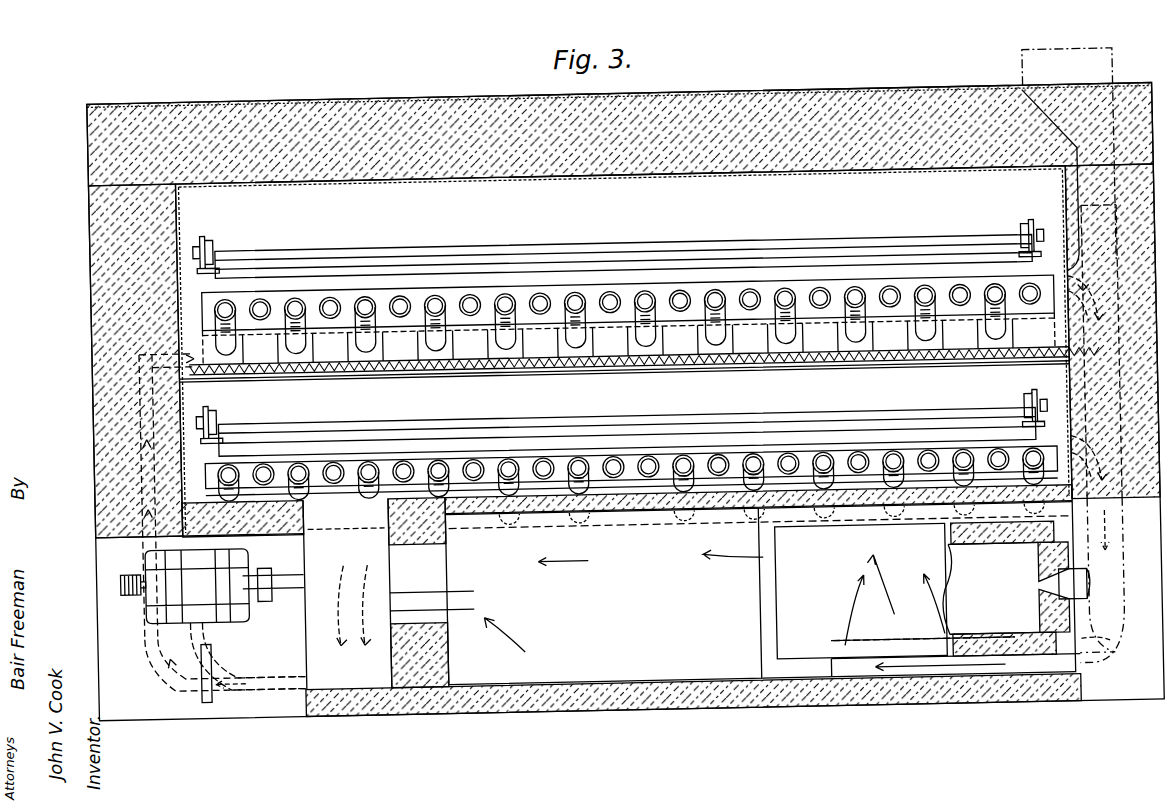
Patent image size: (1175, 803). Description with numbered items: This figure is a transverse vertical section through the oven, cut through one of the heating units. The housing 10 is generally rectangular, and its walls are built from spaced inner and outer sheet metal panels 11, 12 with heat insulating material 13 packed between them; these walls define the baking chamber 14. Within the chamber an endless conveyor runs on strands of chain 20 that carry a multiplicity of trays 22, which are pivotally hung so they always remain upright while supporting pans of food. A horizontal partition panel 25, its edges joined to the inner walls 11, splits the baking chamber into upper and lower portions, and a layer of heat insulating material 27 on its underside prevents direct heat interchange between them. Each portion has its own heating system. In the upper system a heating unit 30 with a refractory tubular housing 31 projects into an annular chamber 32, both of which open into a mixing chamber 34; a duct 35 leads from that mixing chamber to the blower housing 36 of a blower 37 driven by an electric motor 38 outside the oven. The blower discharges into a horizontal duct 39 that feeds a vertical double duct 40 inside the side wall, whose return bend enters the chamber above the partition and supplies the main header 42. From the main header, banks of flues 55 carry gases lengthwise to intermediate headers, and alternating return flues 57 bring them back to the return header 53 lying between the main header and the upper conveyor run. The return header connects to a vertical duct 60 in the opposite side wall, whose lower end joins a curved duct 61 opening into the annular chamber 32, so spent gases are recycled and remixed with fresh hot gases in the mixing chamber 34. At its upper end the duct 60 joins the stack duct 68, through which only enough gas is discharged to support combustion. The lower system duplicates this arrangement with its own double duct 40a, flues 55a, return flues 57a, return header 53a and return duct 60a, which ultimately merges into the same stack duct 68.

The housing 10 is at (395, 93).
The inner sheet metal panel 11 is at (375, 176).
The outer sheet metal panel 12 is at (665, 93).
The heat insulating material 13 is at (688, 132).
The baking chamber 14 is at (652, 199).
The endless chain 20 is at (203, 232).
The trays 22 is at (665, 263).
The partition panel 25 is at (730, 373).
The heat insulating layer 27 is at (882, 368).
The main header 42 is at (458, 366).
The return header 53 is at (540, 284).
The return header 53a is at (562, 455).
The flues 55 is at (298, 350).
The flues 55a is at (510, 500).
The return flues 57 is at (472, 291).
The return flues 57a is at (472, 455).
The vertical duct 60 is at (1090, 384).
The return duct 60a is at (1125, 570).
The stack duct 68 is at (1119, 60).
The double duct 40 is at (140, 451).
The double duct 40a is at (150, 514).
The blower 37 is at (360, 577).
The duct 35 is at (442, 613).
The blower housing 36 is at (318, 704).
The mixing chamber 34 is at (580, 690).
The chamber 32 is at (758, 690).
The heating unit 30 is at (810, 668).
The tubular housing 31 is at (890, 663).
The curved duct 61 is at (920, 690).
The electric motor 38 is at (186, 608).
The horizontal duct 39 is at (290, 636).